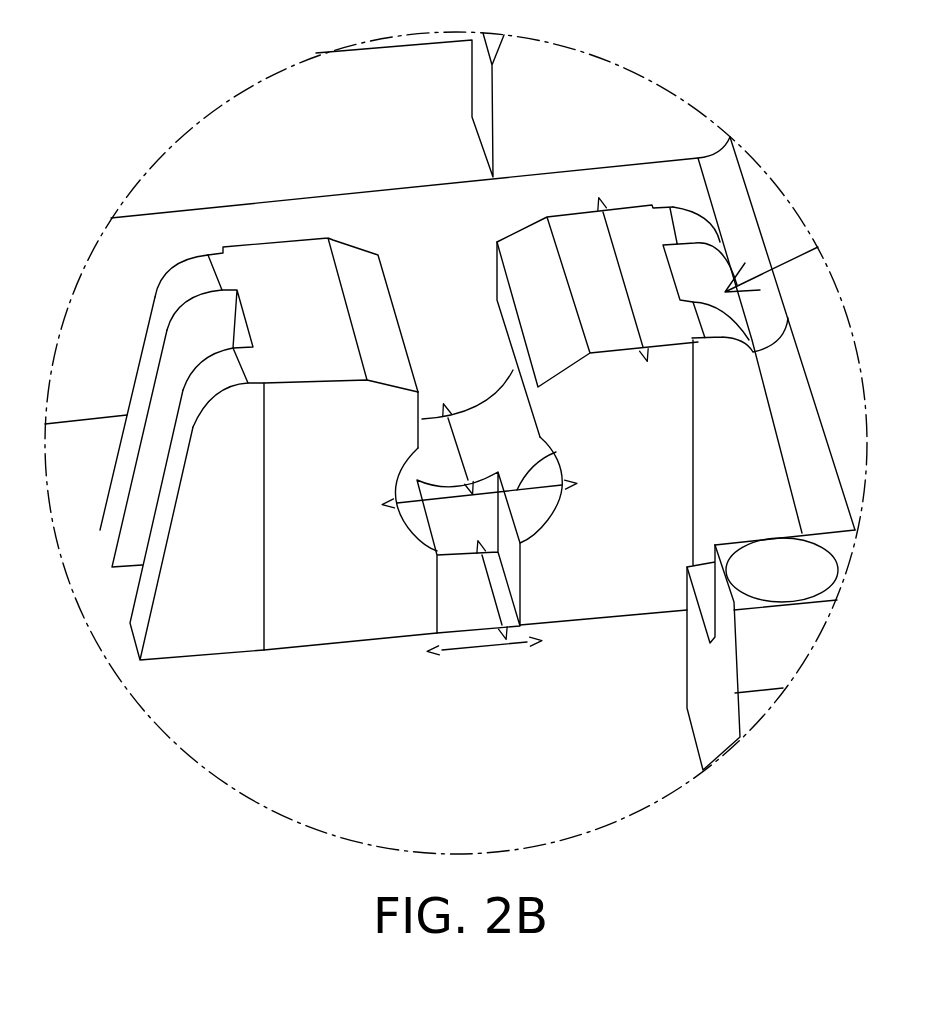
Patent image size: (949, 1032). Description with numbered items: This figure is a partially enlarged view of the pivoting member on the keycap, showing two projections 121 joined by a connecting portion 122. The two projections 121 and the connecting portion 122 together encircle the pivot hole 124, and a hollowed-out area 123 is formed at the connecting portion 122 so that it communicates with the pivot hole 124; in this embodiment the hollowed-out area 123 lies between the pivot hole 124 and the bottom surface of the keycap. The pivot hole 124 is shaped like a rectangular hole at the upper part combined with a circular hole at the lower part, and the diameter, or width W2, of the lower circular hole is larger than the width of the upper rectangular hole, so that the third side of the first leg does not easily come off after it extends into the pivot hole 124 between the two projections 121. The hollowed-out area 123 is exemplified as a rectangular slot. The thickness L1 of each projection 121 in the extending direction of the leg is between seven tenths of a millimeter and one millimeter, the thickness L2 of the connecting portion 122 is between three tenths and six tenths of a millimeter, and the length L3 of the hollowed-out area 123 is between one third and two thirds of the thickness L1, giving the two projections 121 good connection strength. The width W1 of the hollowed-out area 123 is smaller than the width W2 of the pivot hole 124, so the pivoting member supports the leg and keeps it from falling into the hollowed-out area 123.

The projection 121 is at (288, 280).
The connecting portion 122 is at (473, 423).
The hollowed-out area 123 is at (458, 578).
The pivot hole 124 is at (530, 507).
The thickness of the projection L1 is at (623, 277).
The thickness of the connecting portion L2 is at (460, 448).
The length of the hollowed-out area L3 is at (520, 560).
The width of the hollowed-out area W1 is at (484, 661).
The width of the pivot hole W2 is at (556, 452).